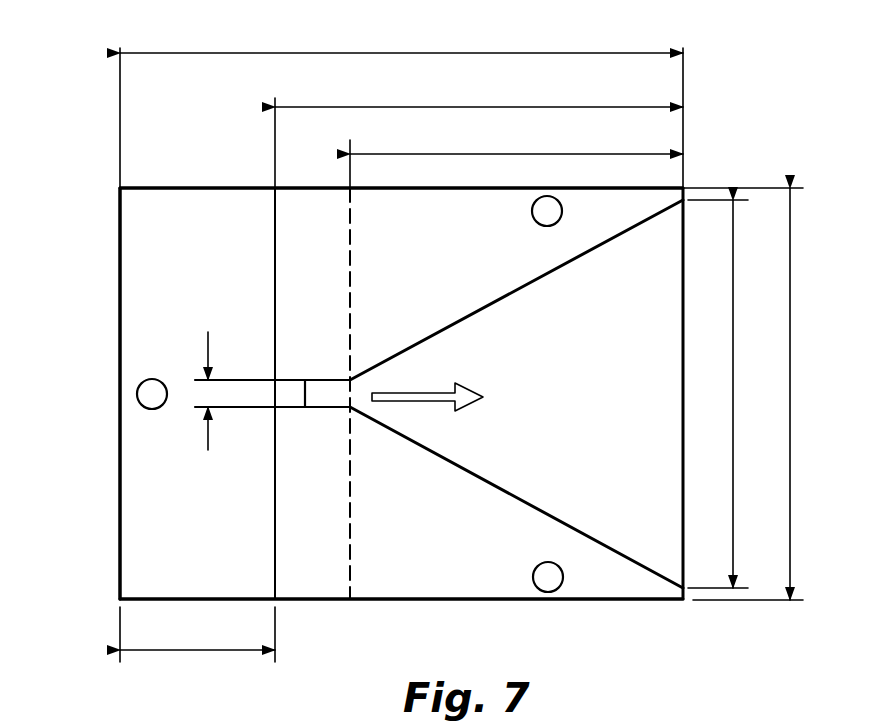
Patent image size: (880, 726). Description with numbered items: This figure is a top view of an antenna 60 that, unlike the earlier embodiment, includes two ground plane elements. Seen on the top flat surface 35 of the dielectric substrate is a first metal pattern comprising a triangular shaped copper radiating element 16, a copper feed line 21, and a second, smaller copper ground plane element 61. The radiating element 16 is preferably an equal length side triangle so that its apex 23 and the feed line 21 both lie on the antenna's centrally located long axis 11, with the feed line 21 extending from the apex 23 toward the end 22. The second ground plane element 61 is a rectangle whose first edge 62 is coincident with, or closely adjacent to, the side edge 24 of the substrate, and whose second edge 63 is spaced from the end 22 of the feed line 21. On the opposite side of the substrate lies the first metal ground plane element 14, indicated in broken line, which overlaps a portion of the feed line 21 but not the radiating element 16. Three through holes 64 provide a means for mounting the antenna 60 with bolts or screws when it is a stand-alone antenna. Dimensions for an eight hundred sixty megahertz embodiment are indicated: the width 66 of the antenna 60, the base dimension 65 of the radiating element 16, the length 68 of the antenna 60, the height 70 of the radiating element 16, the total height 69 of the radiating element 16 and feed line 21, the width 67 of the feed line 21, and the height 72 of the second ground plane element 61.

The antenna 60 is at (74, 90).
The second metal ground plane element 61 is at (145, 505).
The first edge 62 is at (120, 348).
The second edge 63 is at (278, 290).
The metal ground plane element 14 is at (350, 493).
The side edge 24 is at (120, 222).
The top flat surface 35 is at (473, 575).
The radiating element 16 is at (655, 260).
The feed line 21 is at (313, 390).
The end of metal feed line 22 is at (298, 408).
The apex 23 is at (358, 393).
The long axis 11 is at (440, 372).
The through holes 64 is at (138, 393).
The length of antenna 68 is at (403, 52).
The total height of radiating element and feed line 69 is at (478, 107).
The height of radiating element 70 is at (530, 152).
The base dimension of radiating element 65 is at (735, 402).
The width of antenna 66 is at (792, 378).
The width of feed line 67 is at (208, 393).
The height of second ground plane element 72 is at (192, 650).